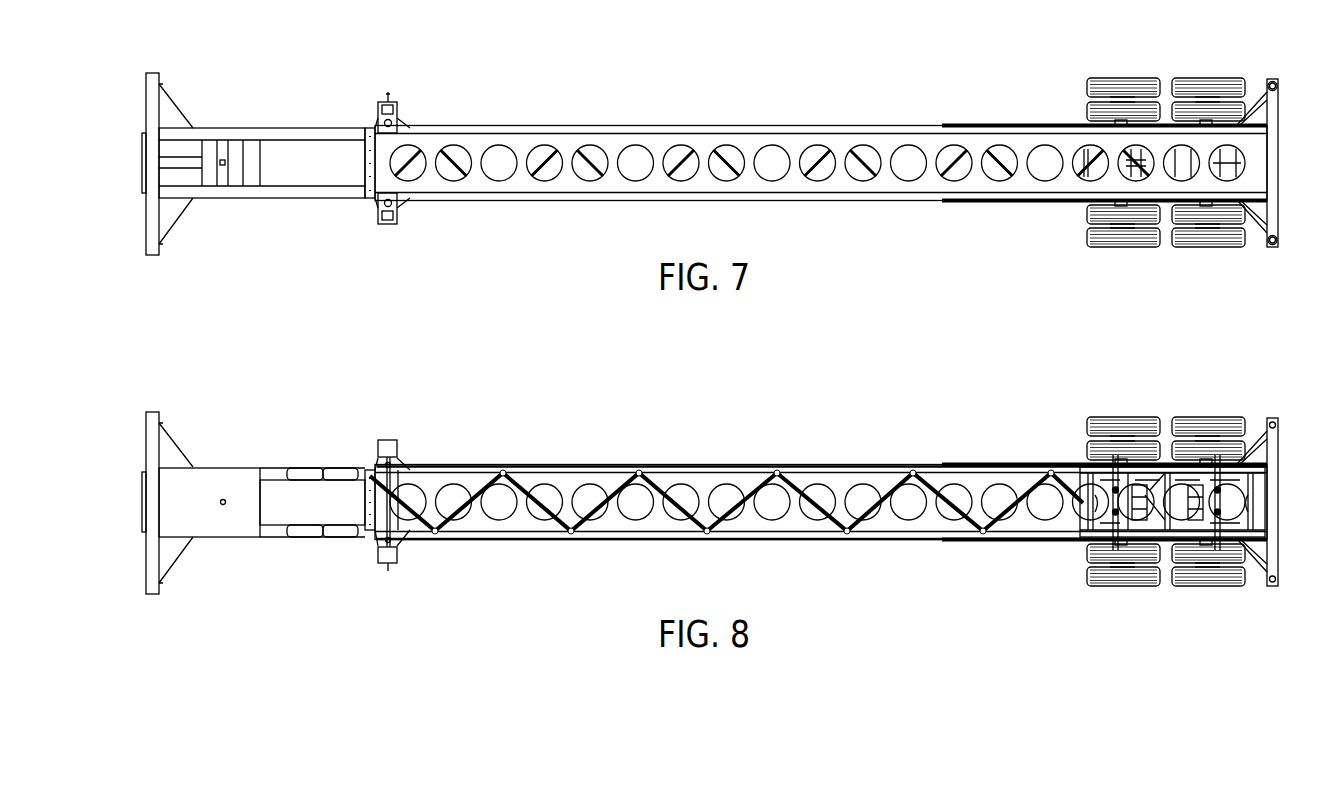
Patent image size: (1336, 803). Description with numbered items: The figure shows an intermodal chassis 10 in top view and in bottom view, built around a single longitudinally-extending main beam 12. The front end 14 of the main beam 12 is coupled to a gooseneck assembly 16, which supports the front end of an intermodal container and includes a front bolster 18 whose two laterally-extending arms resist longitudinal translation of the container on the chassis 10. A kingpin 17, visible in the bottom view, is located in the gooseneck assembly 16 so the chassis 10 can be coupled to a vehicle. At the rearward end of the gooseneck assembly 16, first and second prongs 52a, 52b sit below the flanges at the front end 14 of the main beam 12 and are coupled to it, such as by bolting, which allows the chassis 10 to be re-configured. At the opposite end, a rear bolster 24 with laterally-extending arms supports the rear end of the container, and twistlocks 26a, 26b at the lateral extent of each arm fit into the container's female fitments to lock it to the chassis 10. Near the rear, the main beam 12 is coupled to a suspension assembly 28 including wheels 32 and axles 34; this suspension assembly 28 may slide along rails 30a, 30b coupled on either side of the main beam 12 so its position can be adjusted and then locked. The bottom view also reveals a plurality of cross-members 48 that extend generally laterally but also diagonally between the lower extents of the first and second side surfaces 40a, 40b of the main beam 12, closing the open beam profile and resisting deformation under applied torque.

In FIG. 7, the intermodal chassis 10 is at (753, 66).
In FIG. 8, the intermodal chassis 10 is at (753, 405).
In FIG. 7, the main beam 12 is at (843, 145).
In FIG. 8, the main beam 12 is at (793, 518).
In FIG. 7, the front end 14 is at (371, 207).
In FIG. 8, the front end 14 is at (372, 515).
In FIG. 7, the gooseneck assembly 16 is at (233, 118).
In FIG. 8, the gooseneck assembly 16 is at (262, 502).
In FIG. 8, the kingpin 17 is at (224, 506).
In FIG. 7, the front bolster 18 is at (150, 127).
In FIG. 8, the front bolster 18 is at (150, 467).
In FIG. 7, the rear bolster 24 is at (1274, 187).
In FIG. 8, the rear bolster 24 is at (1274, 522).
In FIG. 7, the twistlock 26a is at (1272, 247).
In FIG. 7, the twistlock 26b is at (1272, 79).
In FIG. 8, the suspension assembly 28 is at (1083, 544).
In FIG. 7, the rail 30a is at (960, 201).
In FIG. 8, the rail 30a is at (952, 463).
In FIG. 7, the rail 30b is at (952, 124).
In FIG. 8, the rail 30b is at (960, 541).
In FIG. 8, the wheels 32 is at (1207, 416).
In FIG. 8, the axles 34 is at (1122, 520).
In FIG. 8, the first side surface 40a is at (515, 541).
In FIG. 8, the second side surface 40b is at (596, 464).
In FIG. 8, the cross-members 48 is at (482, 492).
In FIG. 8, the first prong 52a is at (386, 468).
In FIG. 8, the second prong 52b is at (389, 546).